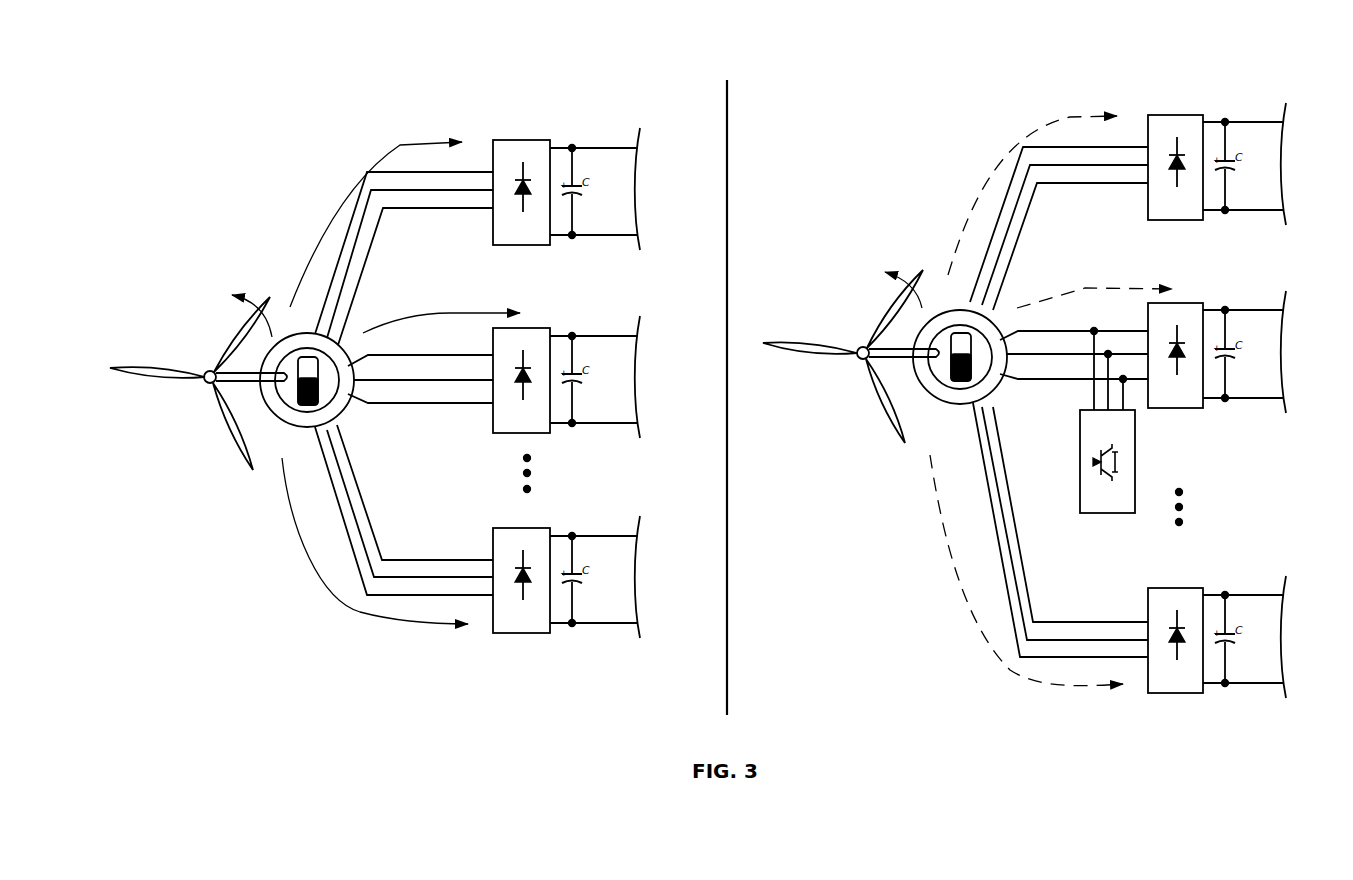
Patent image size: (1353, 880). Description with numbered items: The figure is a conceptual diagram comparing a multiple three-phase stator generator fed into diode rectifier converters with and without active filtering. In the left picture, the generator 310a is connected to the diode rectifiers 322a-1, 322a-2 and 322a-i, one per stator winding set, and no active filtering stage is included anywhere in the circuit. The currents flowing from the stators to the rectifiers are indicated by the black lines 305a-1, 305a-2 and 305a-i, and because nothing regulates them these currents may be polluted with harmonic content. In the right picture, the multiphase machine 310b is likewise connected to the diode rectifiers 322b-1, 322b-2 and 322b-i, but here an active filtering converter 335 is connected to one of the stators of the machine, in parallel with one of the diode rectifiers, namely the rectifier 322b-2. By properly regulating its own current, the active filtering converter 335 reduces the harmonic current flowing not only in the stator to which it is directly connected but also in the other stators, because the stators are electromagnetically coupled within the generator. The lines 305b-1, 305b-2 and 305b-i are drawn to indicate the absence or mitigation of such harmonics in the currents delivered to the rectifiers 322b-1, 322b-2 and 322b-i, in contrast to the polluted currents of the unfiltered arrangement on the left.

The generator 310a is at (262, 256).
The multiphase machine 310b is at (871, 209).
The black line 305a-1 is at (320, 212).
The black line 305a-2 is at (462, 312).
The black line 305a-i is at (333, 603).
The line 305b-1 is at (973, 200).
The line 305b-2 is at (1088, 290).
The line 305b-i is at (963, 585).
The diode rectifier 322a-1 is at (552, 145).
The diode rectifier 322a-2 is at (552, 330).
The diode rectifier 322a-i is at (552, 530).
The diode rectifier 322b-1 is at (1203, 118).
The diode rectifier 322b-2 is at (1203, 305).
The diode rectifier 322b-i is at (1205, 590).
The active filtering converter 335 is at (1100, 515).